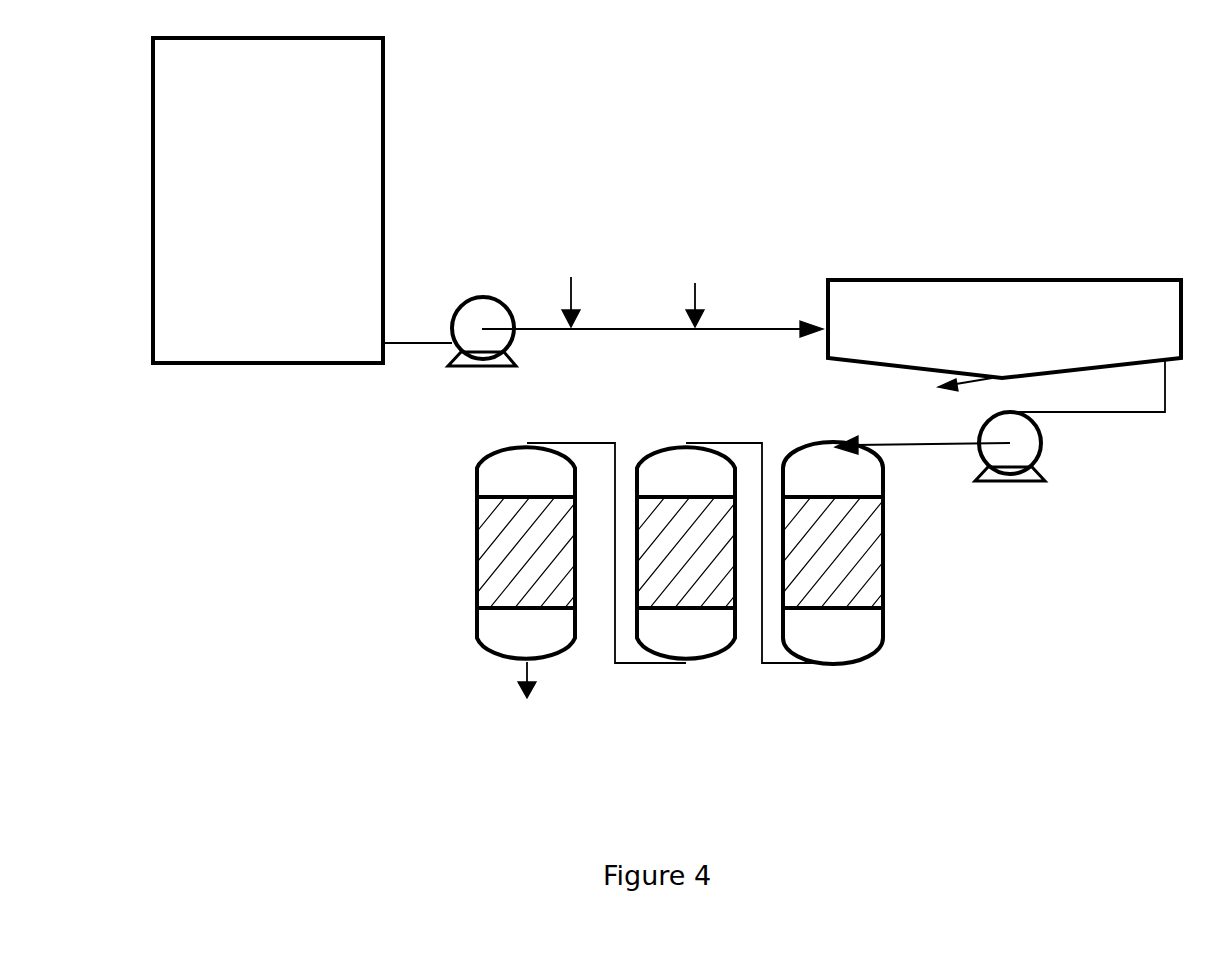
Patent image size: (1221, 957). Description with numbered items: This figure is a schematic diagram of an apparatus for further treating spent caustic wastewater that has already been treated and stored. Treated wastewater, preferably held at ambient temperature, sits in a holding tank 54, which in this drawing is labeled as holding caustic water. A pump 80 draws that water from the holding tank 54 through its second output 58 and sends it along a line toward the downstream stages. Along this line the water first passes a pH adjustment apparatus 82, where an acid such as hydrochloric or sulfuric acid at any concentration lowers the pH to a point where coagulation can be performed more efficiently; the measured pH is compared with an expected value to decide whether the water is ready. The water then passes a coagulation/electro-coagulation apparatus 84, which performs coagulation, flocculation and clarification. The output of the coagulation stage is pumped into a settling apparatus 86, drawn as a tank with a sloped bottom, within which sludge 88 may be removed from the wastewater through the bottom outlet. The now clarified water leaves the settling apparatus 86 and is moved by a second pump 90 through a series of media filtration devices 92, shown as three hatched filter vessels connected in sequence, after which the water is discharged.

The holding tank 54 is at (372, 90).
The second output 58 is at (400, 332).
The pump 80 is at (440, 392).
The pH adjustment apparatus 82 is at (620, 250).
The coagulation/electro-coagulation apparatus 84 is at (808, 251).
The settling apparatus 86 is at (1088, 300).
The sludge 88 is at (860, 383).
The second pump 90 is at (1030, 450).
The media filtration devices 92 is at (487, 628).